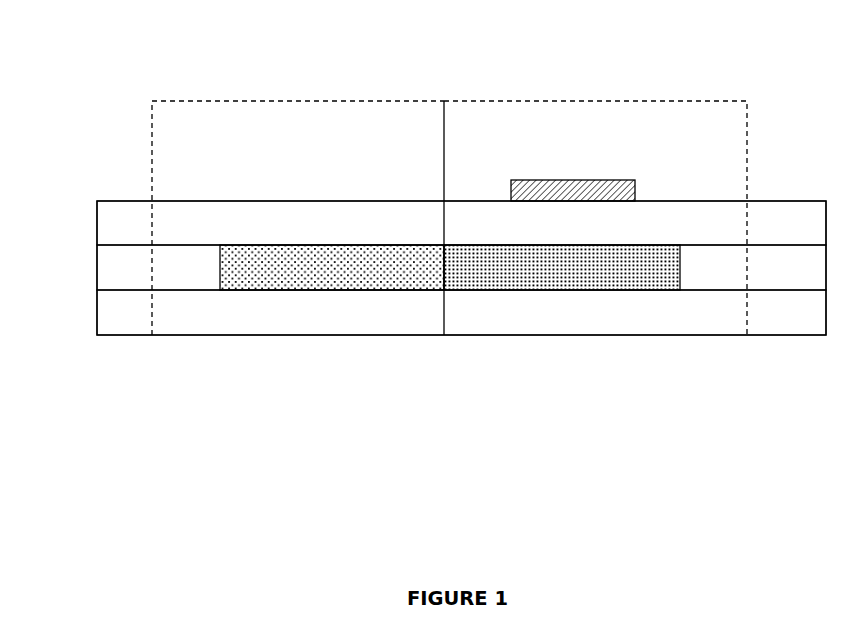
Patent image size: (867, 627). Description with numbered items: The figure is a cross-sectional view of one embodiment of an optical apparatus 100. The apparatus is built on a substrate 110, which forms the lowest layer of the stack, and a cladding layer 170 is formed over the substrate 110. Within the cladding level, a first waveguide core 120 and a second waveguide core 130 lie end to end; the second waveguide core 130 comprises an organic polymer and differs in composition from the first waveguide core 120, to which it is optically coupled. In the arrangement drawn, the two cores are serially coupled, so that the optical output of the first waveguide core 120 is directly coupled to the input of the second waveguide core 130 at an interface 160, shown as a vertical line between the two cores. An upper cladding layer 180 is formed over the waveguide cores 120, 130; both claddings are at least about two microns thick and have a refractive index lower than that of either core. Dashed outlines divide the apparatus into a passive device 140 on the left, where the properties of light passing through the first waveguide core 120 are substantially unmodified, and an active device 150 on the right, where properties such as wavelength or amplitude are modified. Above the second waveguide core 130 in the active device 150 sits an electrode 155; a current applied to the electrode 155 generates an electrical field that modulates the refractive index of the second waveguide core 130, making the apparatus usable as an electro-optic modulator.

The optical apparatus 100 is at (86, 91).
The substrate 110 is at (97, 323).
The first waveguide core 120 is at (283, 290).
The second waveguide core 130 is at (647, 273).
The passive device 140 is at (350, 116).
The active device 150 is at (699, 116).
The electrode 155 is at (575, 180).
The interface 160 is at (443, 271).
The cladding layer 170 is at (97, 280).
The upper cladding layer 180 is at (97, 232).